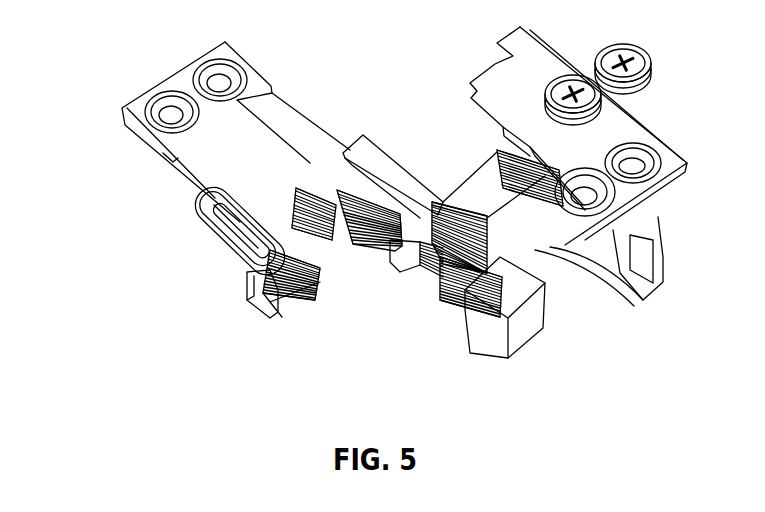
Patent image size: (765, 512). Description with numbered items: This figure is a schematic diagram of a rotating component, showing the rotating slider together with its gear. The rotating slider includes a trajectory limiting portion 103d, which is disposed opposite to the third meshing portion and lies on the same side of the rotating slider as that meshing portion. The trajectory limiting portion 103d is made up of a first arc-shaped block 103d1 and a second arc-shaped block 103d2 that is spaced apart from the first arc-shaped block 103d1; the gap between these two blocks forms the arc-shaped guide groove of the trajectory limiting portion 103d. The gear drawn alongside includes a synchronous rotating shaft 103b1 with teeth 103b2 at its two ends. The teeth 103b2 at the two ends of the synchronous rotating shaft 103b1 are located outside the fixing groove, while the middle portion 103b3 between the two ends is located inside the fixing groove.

The synchronous rotating shaft 103b1 is at (397, 267).
The teeth 103b2 is at (358, 217).
The middle portion 103b3 is at (497, 205).
The trajectory limiting portion 103d is at (230, 248).
The first arc-shaped block 103d1 is at (200, 207).
The second arc-shaped block 103d2 is at (213, 233).